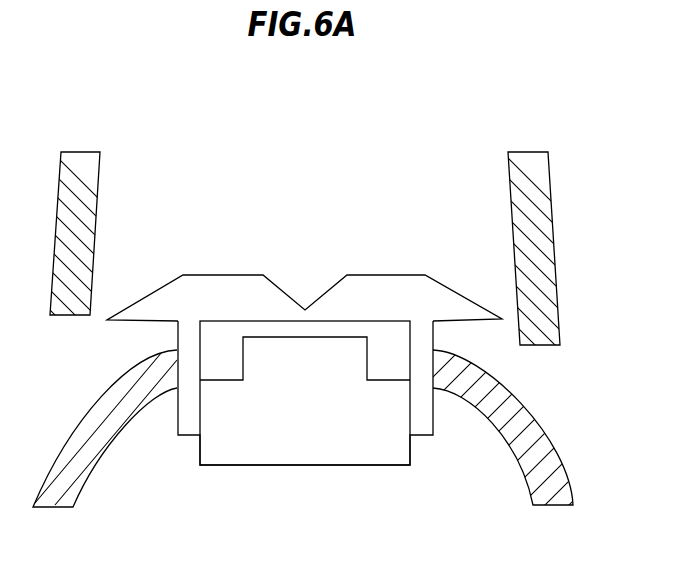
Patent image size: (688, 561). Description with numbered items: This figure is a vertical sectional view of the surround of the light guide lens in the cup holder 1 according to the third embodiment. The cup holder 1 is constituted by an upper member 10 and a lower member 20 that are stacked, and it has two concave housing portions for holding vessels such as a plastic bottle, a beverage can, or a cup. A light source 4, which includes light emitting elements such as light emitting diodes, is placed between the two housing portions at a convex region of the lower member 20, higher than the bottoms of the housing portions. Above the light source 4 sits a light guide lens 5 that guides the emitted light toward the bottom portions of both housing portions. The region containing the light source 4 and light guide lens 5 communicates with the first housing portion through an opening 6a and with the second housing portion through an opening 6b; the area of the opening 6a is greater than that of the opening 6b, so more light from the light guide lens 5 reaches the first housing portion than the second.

The cup holder 1 is at (557, 122).
The light source 4 is at (313, 457).
The light guide lens 5 is at (360, 285).
The opening 6a is at (83, 317).
The opening 6b is at (522, 350).
The upper member 10 is at (543, 245).
The lower member 20 is at (532, 438).